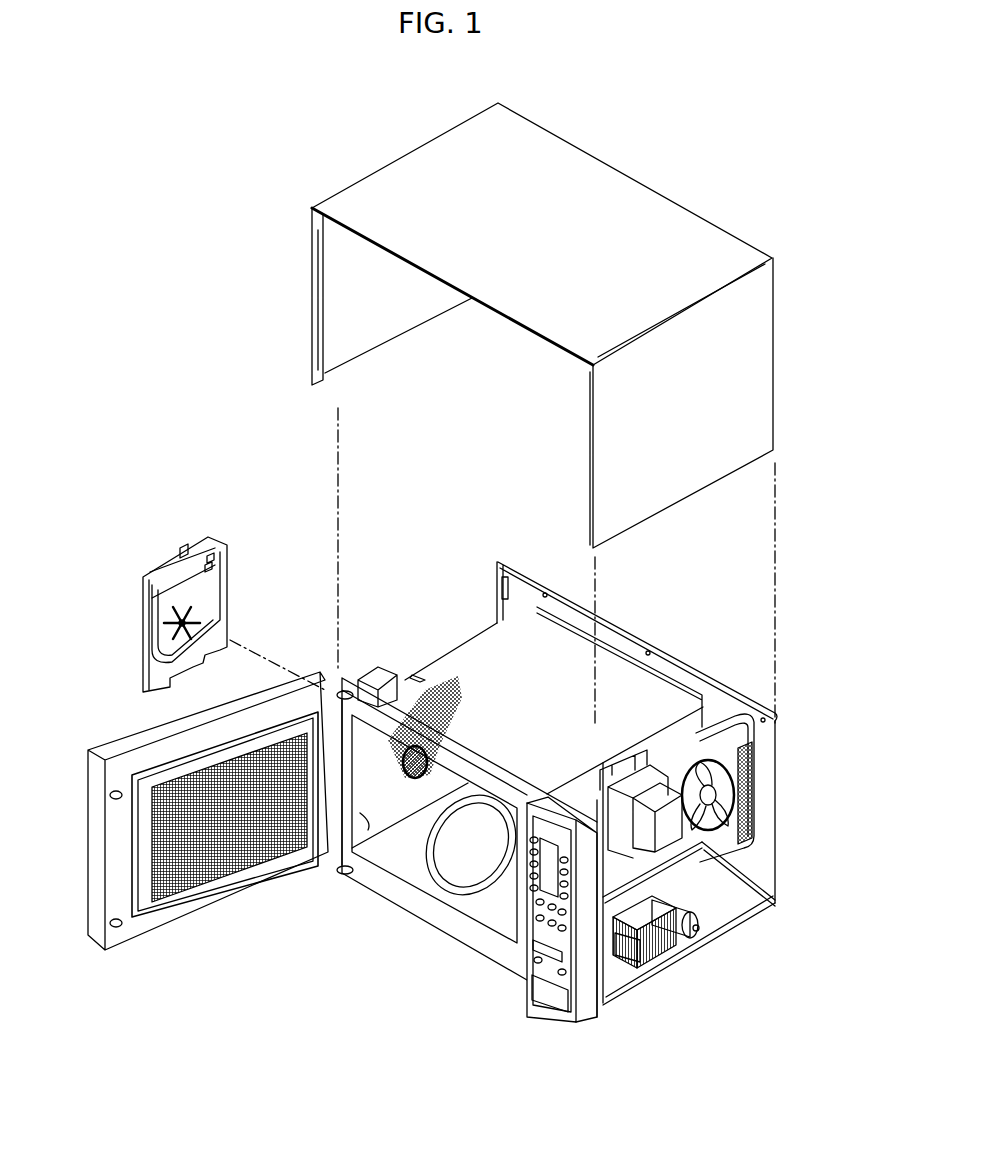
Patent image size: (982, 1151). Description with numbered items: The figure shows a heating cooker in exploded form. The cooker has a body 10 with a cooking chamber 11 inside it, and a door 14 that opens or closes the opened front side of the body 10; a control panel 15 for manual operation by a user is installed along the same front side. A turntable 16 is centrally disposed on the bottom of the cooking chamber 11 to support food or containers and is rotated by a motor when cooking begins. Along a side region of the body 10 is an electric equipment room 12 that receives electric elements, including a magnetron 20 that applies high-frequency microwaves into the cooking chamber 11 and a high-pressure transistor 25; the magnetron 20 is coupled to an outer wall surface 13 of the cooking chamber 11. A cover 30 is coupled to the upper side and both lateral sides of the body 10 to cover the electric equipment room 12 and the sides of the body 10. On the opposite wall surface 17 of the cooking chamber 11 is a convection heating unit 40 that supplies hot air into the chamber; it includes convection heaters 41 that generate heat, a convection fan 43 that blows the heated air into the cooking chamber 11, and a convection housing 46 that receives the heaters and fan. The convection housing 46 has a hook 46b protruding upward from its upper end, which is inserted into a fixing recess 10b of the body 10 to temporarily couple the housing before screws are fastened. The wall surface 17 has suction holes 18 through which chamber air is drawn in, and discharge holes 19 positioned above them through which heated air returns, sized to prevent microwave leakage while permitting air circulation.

The body 10 is at (507, 958).
The fixing recess 10b is at (418, 673).
The cooking chamber 11 is at (400, 862).
The electric equipment room 12 is at (698, 878).
The outer wall surface 13 is at (677, 730).
The door 14 is at (95, 873).
The control panel 15 is at (563, 1008).
The turntable 16 is at (443, 880).
The outer wall surface 17 is at (360, 812).
The suction holes 18 is at (402, 766).
The discharge holes 19 is at (453, 686).
The magnetron 20 is at (670, 823).
The high-pressure transistor 25 is at (660, 943).
The cover 30 is at (748, 400).
The convection heating unit 40 is at (175, 591).
The convection heaters 41 is at (210, 567).
The convection fan 43 is at (197, 620).
The convection housing 46 is at (157, 668).
The hook 46b is at (185, 550).